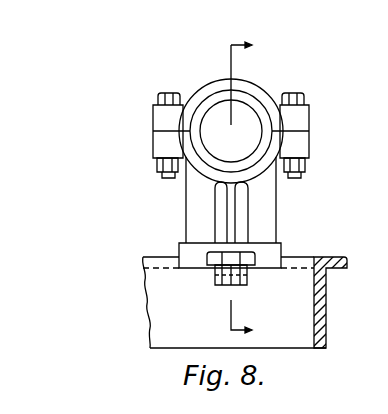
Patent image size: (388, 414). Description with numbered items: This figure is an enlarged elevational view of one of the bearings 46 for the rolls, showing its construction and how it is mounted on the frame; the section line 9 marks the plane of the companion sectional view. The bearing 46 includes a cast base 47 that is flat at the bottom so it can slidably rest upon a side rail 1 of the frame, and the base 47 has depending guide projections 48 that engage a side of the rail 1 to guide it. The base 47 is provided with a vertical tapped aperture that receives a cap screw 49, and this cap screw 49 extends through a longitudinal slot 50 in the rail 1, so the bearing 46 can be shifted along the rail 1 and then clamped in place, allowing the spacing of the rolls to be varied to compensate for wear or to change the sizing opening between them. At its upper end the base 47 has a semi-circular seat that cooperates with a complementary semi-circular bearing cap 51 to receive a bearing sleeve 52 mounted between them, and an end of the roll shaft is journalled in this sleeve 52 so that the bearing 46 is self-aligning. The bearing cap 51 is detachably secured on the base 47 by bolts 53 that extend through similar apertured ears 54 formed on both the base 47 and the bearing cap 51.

The side rail 1 is at (158, 337).
The section line 9- 9 is at (250, 187).
The bearing 46 is at (173, 193).
The cast base 47 is at (265, 216).
The depending guide projections 48 is at (197, 268).
The cap screw 49 is at (258, 265).
The longitudinal slot 50 is at (225, 262).
The bearing cap 51 is at (210, 80).
The bearing sleeve 52 is at (238, 97).
The bolts 53 is at (162, 98).
The apertured ears 54 is at (162, 145).